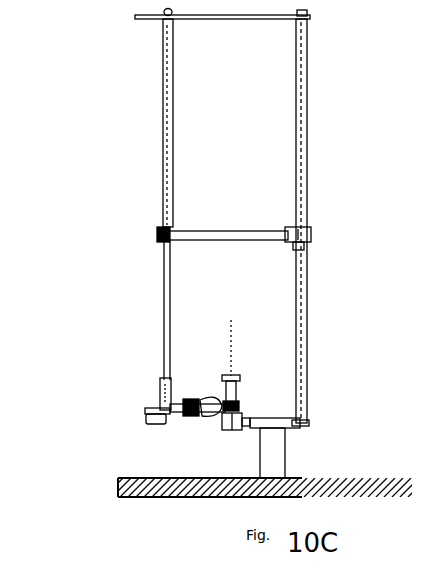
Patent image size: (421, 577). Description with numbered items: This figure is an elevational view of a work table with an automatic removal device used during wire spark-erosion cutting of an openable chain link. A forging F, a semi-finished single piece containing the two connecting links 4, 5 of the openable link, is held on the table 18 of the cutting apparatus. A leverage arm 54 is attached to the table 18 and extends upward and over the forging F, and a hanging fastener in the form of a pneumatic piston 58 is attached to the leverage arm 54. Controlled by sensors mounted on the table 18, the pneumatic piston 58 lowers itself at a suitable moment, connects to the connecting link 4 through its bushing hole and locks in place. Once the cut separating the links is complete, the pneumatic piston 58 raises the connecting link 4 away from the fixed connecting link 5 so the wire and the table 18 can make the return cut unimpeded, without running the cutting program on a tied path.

The connecting link 4 is at (158, 410).
The connecting link 5 is at (206, 398).
The table 18 is at (275, 452).
The leverage arm 54 is at (302, 122).
The pneumatic piston 58 is at (163, 120).
The forging F is at (192, 406).